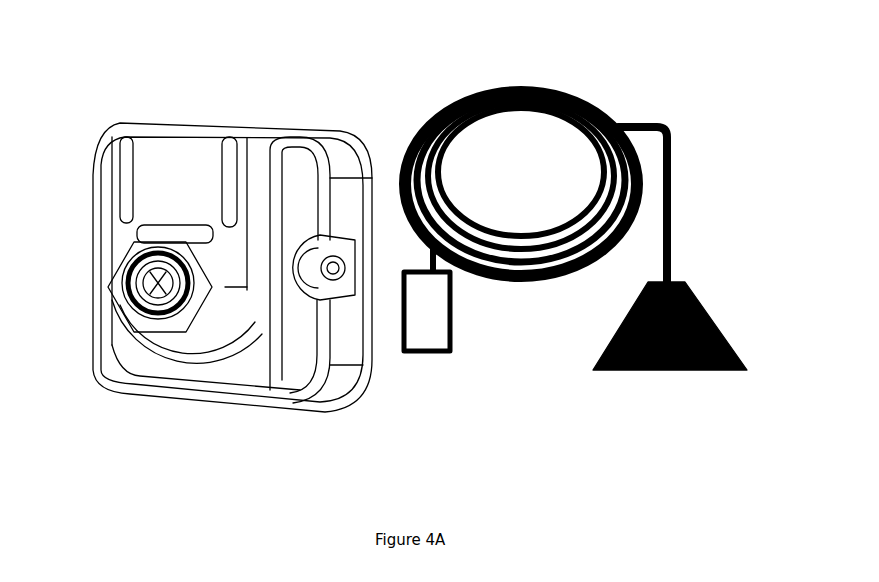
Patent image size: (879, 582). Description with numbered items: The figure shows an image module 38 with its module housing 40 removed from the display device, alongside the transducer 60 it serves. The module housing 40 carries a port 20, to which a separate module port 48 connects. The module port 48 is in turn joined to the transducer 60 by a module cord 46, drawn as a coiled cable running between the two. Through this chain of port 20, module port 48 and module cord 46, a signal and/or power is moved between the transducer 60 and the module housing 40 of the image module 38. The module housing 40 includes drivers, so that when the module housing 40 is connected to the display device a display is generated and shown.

The port 20 is at (122, 328).
The image module 38 is at (382, 113).
The module housing 40 is at (152, 123).
The module cord 46 is at (540, 92).
The module port 48 is at (438, 340).
The transducer 60 is at (727, 332).